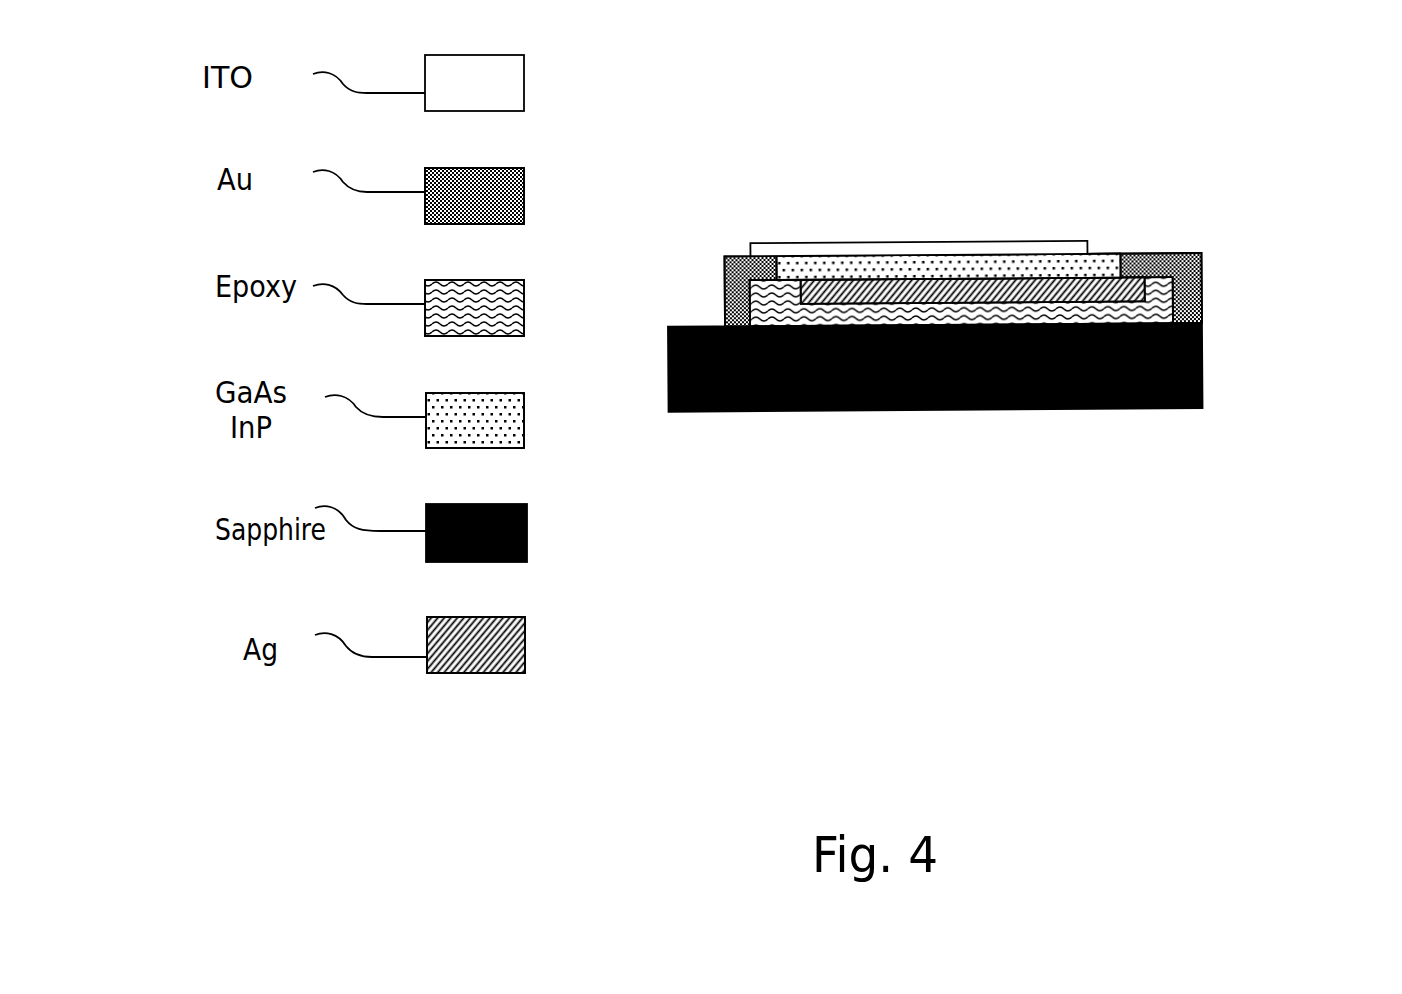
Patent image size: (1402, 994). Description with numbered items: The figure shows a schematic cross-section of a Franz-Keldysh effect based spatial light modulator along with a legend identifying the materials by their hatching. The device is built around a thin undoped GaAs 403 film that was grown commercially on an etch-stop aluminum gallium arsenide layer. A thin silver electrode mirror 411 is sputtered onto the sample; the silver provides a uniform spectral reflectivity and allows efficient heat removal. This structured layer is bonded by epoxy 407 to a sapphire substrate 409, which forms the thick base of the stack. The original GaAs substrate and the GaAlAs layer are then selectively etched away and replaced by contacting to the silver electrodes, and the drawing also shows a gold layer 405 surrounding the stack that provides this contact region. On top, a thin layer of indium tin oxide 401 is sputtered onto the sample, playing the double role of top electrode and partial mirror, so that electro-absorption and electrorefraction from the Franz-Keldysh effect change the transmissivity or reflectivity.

The indium tin oxide layer 401 is at (1052, 242).
The thin undoped GaAs 403 is at (1108, 253).
The Au layer 405 is at (1192, 282).
The epoxy 407 is at (1167, 312).
The sapphire substrate 409 is at (1083, 409).
The silver electrode mirror 411 is at (822, 287).